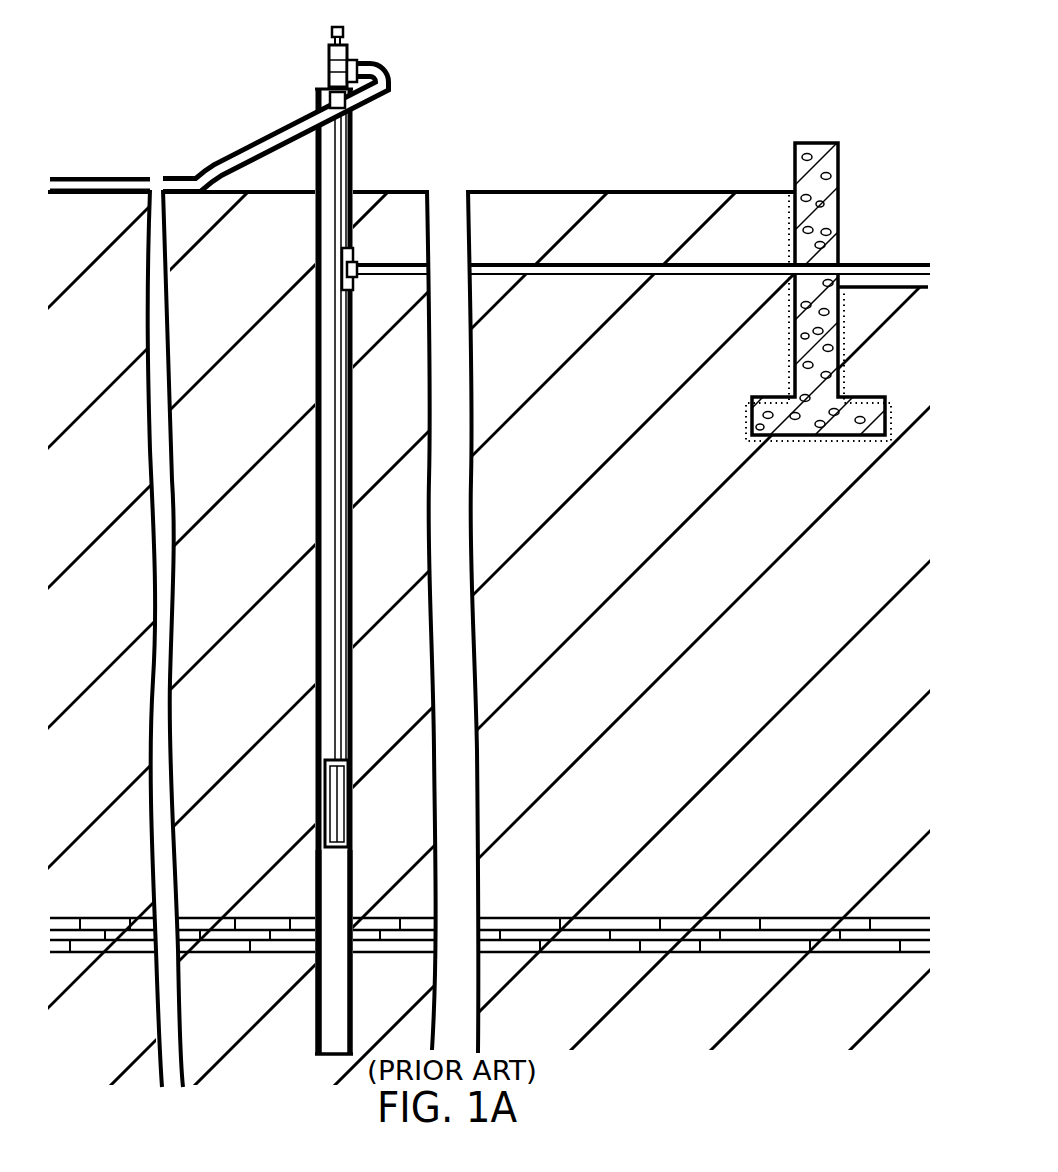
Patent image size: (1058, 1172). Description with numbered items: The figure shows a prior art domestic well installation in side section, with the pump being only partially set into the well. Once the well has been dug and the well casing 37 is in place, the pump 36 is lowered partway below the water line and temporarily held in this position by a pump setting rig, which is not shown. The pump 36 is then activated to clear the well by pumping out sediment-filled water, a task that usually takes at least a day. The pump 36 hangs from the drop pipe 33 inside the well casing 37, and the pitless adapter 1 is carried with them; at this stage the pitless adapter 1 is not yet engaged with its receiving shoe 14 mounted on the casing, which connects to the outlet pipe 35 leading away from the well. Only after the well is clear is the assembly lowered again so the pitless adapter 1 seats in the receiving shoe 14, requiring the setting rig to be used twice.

The pitless adapter 1 is at (330, 72).
The receiving shoe 14 is at (353, 264).
The drop pipe 33 is at (334, 351).
The discharge pipe 35 is at (612, 264).
The pump 36 is at (328, 805).
The well casing 37 is at (353, 884).